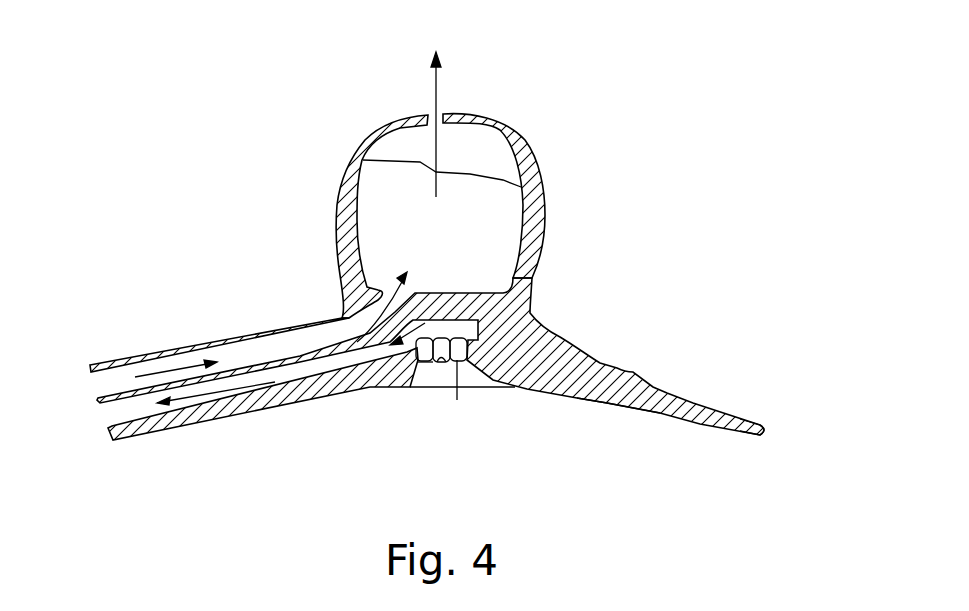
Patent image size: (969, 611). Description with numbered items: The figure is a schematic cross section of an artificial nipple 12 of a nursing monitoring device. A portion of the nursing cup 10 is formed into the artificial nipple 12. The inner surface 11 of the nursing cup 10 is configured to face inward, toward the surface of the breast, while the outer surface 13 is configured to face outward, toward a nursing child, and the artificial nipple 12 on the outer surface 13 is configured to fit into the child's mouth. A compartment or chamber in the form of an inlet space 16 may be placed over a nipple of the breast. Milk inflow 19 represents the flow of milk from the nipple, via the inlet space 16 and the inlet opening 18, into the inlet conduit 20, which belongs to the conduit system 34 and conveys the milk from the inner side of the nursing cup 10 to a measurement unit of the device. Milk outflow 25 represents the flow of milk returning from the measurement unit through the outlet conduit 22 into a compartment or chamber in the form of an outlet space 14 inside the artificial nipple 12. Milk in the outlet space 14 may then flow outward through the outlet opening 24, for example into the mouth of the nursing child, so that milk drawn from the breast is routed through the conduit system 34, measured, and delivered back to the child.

The nursing cup 10 is at (660, 393).
The inner surface 11 is at (610, 407).
The artificial nipple 12 is at (538, 180).
The outer surface 13 is at (708, 407).
The outlet space 14 is at (493, 255).
The inlet space 16 is at (467, 360).
The inlet opening 18 is at (423, 365).
The milk inflow 19 is at (450, 365).
The inlet conduit 20 is at (297, 373).
The outlet conduit 22 is at (125, 375).
The outlet opening 24 is at (437, 113).
The milk outflow 25 is at (343, 325).
The conduit system 34 is at (205, 345).